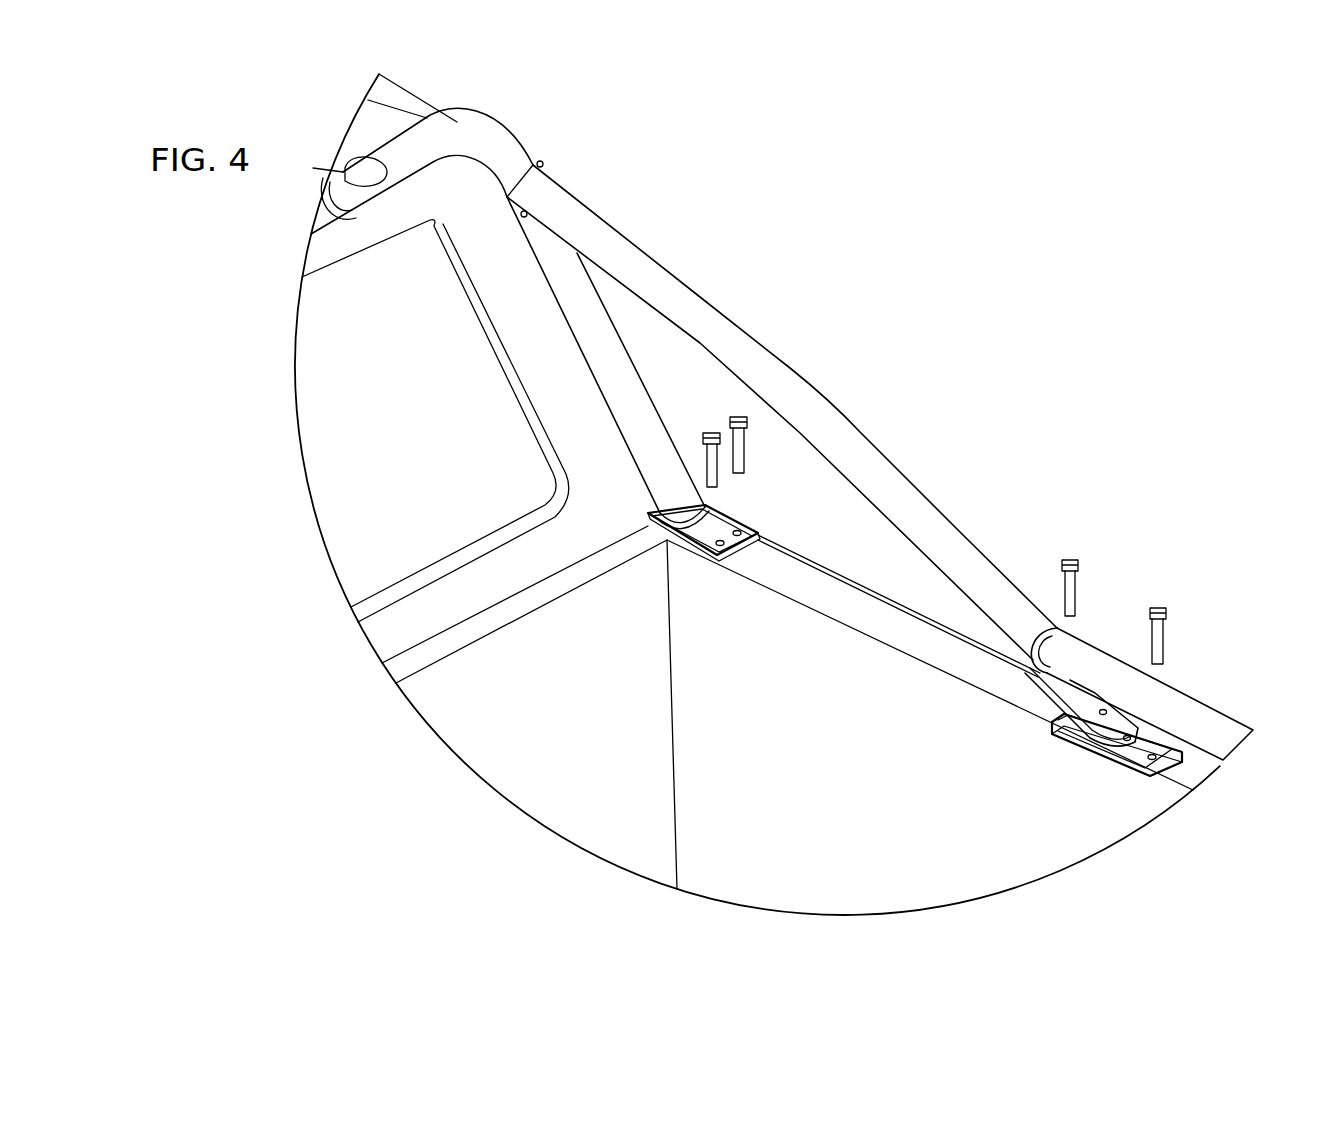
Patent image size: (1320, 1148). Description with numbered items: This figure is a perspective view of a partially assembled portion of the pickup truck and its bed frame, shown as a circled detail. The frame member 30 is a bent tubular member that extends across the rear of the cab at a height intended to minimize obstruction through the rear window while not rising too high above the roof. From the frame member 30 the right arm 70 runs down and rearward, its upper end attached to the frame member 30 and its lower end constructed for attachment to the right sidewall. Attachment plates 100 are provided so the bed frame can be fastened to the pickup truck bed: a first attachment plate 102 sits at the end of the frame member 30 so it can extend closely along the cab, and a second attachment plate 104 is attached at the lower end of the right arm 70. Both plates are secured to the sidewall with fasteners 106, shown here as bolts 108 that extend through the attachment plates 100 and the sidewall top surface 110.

The frame member 30 is at (503, 153).
The right arm 70 is at (702, 317).
The attachment plates 100 is at (710, 548).
The first attachment plate 102 is at (728, 523).
The second attachment plate 104 is at (1068, 730).
The fasteners 106 is at (736, 417).
The bolts 108 is at (714, 480).
The sidewall top surface 110 is at (840, 590).